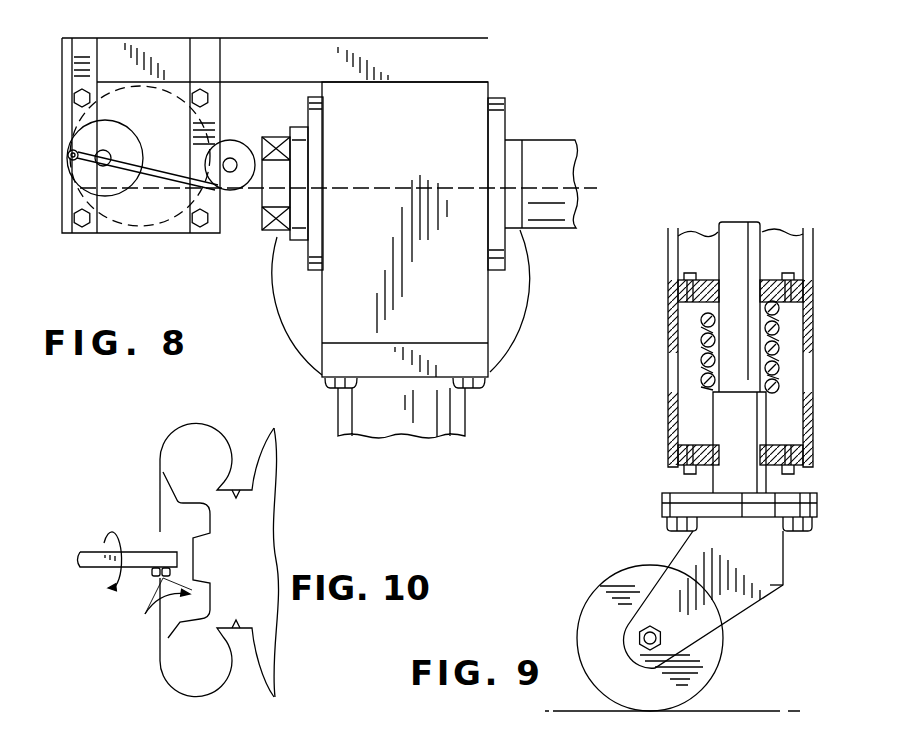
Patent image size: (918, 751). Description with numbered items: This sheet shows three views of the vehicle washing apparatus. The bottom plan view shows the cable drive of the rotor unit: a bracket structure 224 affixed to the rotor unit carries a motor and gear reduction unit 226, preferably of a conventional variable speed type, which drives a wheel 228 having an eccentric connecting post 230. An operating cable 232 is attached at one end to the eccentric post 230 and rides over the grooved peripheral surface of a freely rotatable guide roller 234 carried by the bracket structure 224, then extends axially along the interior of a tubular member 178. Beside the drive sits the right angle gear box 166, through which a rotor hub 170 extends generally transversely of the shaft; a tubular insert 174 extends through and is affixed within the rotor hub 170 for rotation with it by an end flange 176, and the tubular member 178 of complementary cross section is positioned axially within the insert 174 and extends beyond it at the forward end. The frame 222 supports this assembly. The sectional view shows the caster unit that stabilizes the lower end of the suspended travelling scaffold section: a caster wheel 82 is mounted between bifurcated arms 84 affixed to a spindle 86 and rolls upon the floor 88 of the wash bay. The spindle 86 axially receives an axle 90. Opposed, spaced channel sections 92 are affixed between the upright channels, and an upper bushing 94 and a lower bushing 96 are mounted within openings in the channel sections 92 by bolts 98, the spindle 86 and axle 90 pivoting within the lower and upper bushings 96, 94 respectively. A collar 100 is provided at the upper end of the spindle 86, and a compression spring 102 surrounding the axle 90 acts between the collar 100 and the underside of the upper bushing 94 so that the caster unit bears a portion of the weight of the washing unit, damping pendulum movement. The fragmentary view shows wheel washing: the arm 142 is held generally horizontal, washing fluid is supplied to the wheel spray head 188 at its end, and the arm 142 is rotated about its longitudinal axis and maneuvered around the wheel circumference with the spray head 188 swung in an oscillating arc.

In FIG. 9, the caster wheel 82 is at (603, 602).
In FIG. 9, the bifurcated arms 84 is at (770, 584).
In FIG. 9, the spindle 86 is at (765, 487).
In FIG. 9, the floor 88 is at (733, 710).
In FIG. 9, the axle 90 is at (738, 237).
In FIG. 9, the channel sections 92 is at (816, 316).
In FIG. 9, the upper bushing 94 is at (772, 282).
In FIG. 9, the lower bushing 96 is at (768, 445).
In FIG. 9, the bolts 98 is at (688, 278).
In FIG. 9, the collar 100 is at (705, 383).
In FIG. 9, the compression spring 102 is at (702, 332).
In FIG. 10, the arm 142 is at (88, 539).
In FIG. 8, the right angle gear box 166 is at (343, 317).
In FIG. 8, the rotor hub 170 is at (500, 108).
In FIG. 8, the tubular insert 174 is at (270, 140).
In FIG. 8, the end flange 176 is at (293, 240).
In FIG. 8, the tubular member 178 is at (262, 197).
In FIG. 10, the wheel spray head 188 is at (153, 602).
In FIG. 8, the mounting frame 222 is at (60, 200).
In FIG. 8, the bracket structure 224 is at (318, 52).
In FIG. 8, the motor and gear reduction unit 226 is at (115, 218).
In FIG. 8, the wheel 228 is at (120, 185).
In FIG. 8, the eccentric connecting post 230 is at (70, 155).
In FIG. 8, the operating cable 232 is at (167, 173).
In FIG. 8, the guide roller 234 is at (233, 147).